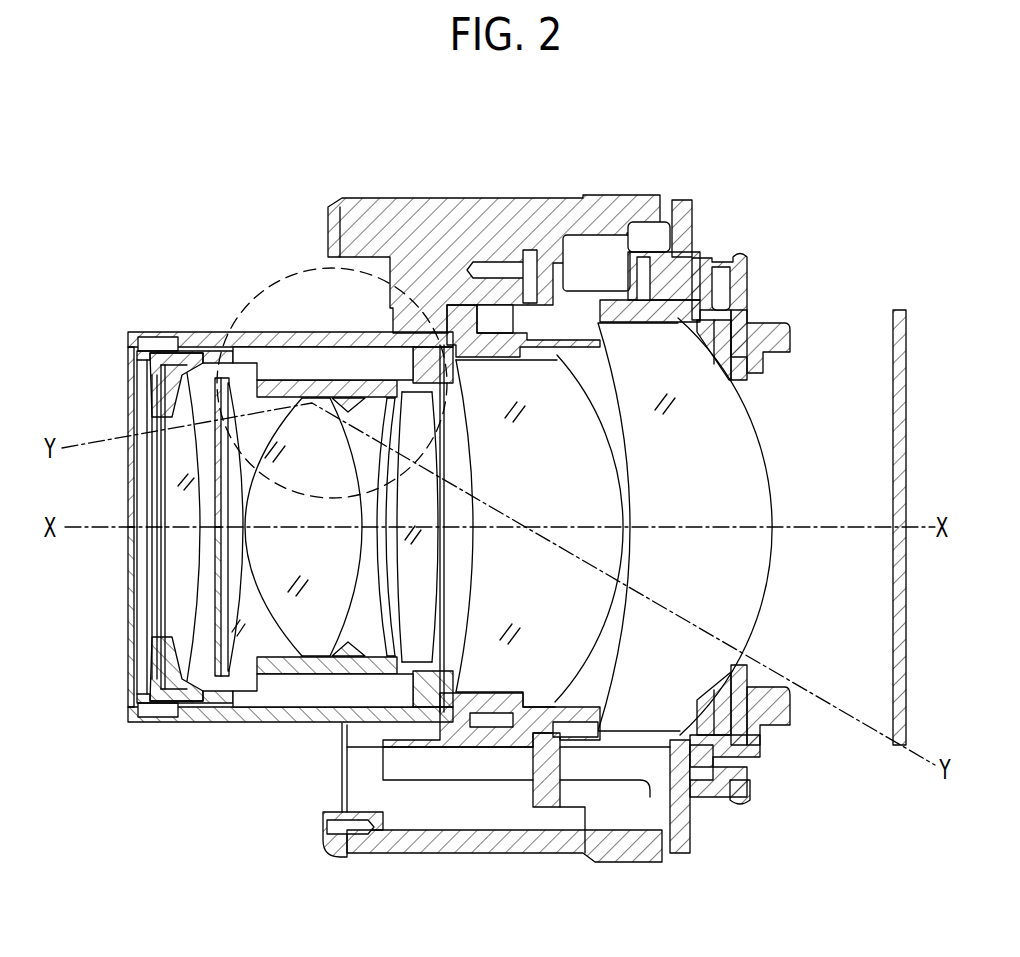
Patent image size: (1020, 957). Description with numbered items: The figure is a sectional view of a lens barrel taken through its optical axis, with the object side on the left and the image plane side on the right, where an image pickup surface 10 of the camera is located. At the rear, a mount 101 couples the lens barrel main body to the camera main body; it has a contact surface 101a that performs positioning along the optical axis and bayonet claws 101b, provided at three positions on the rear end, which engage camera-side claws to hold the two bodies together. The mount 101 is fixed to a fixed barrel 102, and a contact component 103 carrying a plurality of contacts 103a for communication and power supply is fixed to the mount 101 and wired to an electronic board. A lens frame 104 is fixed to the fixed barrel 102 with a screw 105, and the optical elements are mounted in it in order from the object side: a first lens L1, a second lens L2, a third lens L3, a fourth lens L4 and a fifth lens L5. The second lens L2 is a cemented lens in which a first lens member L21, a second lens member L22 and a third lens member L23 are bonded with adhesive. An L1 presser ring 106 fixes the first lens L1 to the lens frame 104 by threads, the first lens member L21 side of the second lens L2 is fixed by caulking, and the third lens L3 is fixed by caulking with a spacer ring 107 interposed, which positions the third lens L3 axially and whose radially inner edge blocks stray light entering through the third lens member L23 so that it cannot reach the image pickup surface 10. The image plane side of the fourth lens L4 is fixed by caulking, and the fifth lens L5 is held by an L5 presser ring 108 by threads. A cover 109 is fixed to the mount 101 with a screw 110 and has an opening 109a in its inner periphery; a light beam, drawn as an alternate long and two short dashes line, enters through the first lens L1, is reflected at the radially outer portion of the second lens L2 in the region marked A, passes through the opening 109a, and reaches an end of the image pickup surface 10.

The image pickup surface 10 is at (906, 618).
The mount 101 is at (752, 262).
The contact surface 101a is at (693, 226).
The bayonet claws 101b is at (742, 800).
The fixed barrel 102 is at (453, 212).
The contact component 103 is at (748, 770).
The contacts 103a is at (760, 745).
The lens frame 104 is at (217, 362).
The screw 105 is at (551, 266).
The L1 presser ring 106 is at (268, 338).
The spacer ring 107 is at (400, 662).
The L5 presser ring 108 is at (648, 262).
The cover 109 is at (755, 298).
The opening 109a is at (755, 370).
The screw 110 is at (720, 272).
The region A is at (332, 367).
The first lens L1 is at (182, 567).
The second lens L2 is at (293, 606).
The first lens member L21 is at (240, 656).
The second lens member L22 is at (305, 656).
The third lens member L23 is at (380, 652).
The third lens L3 is at (421, 568).
The fourth lens L4 is at (537, 492).
The fifth lens L5 is at (697, 492).